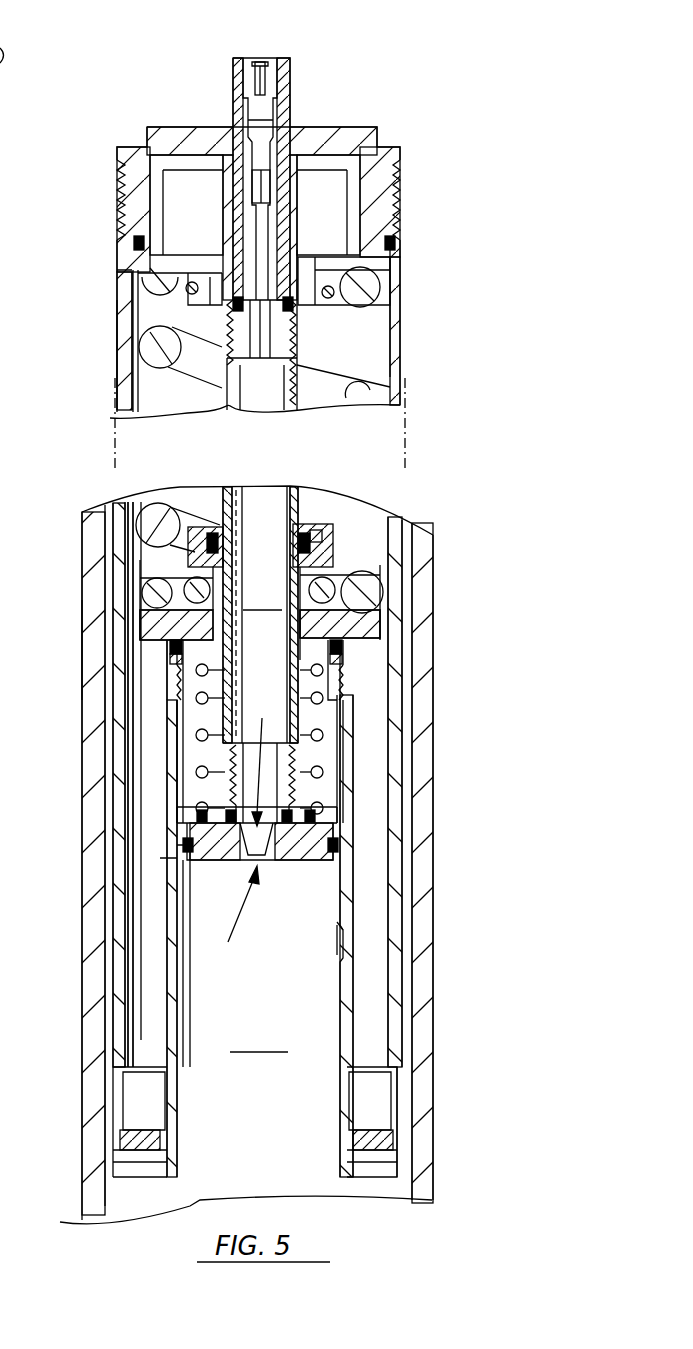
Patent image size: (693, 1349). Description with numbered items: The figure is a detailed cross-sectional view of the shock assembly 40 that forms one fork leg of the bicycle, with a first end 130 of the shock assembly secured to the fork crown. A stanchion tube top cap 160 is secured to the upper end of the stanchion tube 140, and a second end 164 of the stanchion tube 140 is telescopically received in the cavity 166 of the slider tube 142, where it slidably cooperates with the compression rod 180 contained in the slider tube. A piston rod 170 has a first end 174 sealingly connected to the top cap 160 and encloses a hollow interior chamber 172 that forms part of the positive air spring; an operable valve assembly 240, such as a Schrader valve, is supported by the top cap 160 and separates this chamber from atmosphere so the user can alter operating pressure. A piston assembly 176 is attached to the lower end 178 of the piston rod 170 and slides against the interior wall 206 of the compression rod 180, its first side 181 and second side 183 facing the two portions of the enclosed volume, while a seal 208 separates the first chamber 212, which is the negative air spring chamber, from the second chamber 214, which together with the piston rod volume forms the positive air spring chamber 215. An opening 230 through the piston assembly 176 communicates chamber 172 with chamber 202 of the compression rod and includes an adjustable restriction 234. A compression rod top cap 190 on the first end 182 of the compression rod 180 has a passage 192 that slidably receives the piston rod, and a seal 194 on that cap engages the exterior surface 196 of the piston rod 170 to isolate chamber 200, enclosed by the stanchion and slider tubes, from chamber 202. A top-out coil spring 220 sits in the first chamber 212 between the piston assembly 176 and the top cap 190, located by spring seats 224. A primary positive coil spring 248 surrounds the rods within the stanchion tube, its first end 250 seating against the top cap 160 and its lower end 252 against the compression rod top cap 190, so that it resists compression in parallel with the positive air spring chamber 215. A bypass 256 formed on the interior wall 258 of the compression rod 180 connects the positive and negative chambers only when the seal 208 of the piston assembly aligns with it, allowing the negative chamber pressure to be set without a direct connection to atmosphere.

The valve assembly 240 is at (398, 52).
The stanchion tube top cap 160 is at (363, 133).
The first end 130 is at (98, 211).
The first end 250 is at (150, 292).
The stanchion tube 140 is at (115, 306).
The first end 174 is at (298, 328).
The chamber 200 is at (360, 353).
The piston rod 170 is at (220, 410).
The shock assembly 40 is at (478, 440).
The cavity 166 is at (112, 1197).
The slider tube 142 is at (80, 801).
The second end 164 is at (397, 1106).
The compression rod 180 is at (167, 948).
The chamber 202 is at (305, 1007).
The interior wall 206 is at (337, 923).
The bypass 256 is at (338, 952).
The primary positive coil spring 248 is at (155, 505).
The passage 192 is at (300, 580).
The exterior surface 196 is at (304, 545).
The seal 194 is at (308, 543).
The lower end 252 is at (150, 607).
The compression rod top cap 190 is at (370, 630).
The spring seat 224 is at (170, 666).
The first end 182 is at (180, 687).
The first chamber 212 is at (328, 722).
The top-out coil spring 220 is at (200, 734).
The interior chamber 172 is at (250, 487).
The positive air spring chamber 215 is at (259, 818).
The lower end 178 is at (233, 782).
The piston assembly 176 is at (340, 828).
The first side 181 is at (340, 818).
The second side 183 is at (345, 872).
The seal 208 is at (180, 848).
The restriction 234 is at (268, 758).
The opening 230 is at (232, 917).
The second chamber 214 is at (303, 1077).
The interior wall 258 is at (337, 1118).